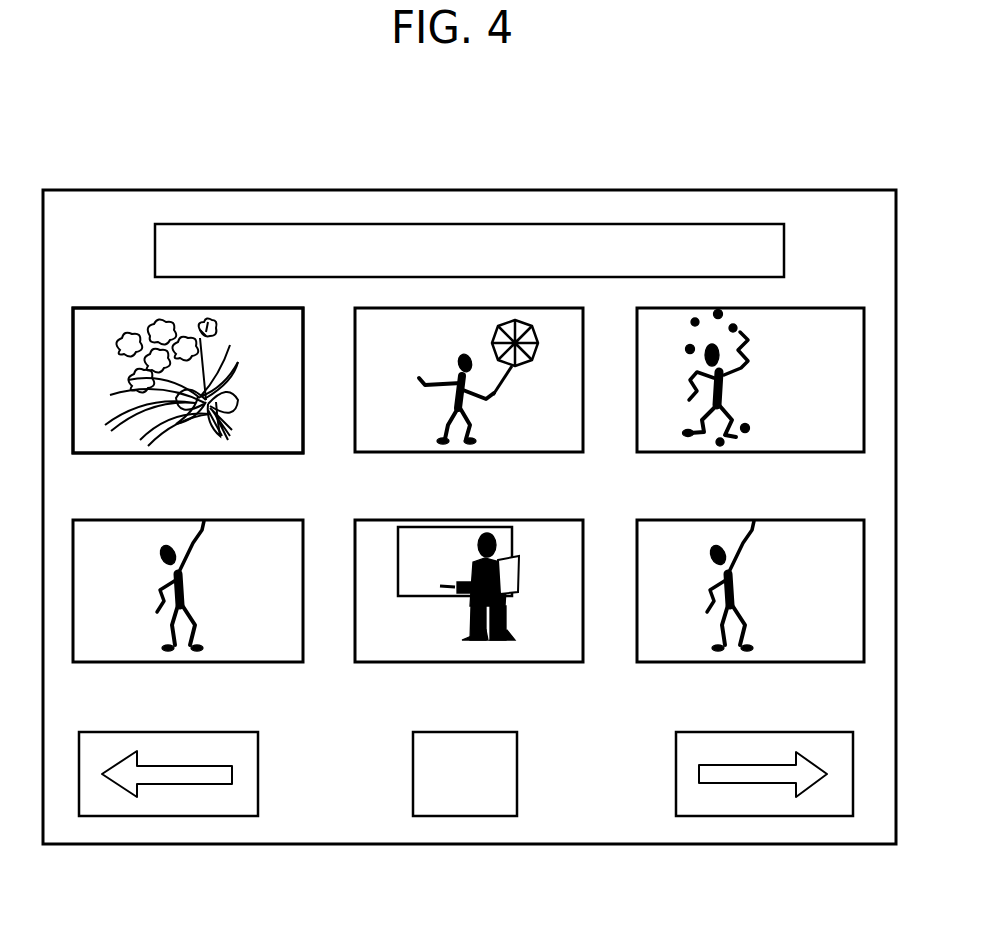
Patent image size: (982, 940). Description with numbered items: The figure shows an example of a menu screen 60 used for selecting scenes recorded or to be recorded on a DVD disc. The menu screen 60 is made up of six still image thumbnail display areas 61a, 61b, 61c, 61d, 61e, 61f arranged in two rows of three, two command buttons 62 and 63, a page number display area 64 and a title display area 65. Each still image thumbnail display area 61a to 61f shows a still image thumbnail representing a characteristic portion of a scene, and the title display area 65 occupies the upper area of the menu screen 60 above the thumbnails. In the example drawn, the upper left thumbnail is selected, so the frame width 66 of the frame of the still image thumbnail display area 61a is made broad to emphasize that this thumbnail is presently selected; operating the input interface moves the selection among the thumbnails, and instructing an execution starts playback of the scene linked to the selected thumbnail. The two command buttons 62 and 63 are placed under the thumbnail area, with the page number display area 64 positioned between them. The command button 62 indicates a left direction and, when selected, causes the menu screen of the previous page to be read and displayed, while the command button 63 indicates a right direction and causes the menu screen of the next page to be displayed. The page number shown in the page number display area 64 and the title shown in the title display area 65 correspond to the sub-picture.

The menu screen 60 is at (403, 190).
The title display area 65 is at (784, 246).
The frame width 66 is at (102, 308).
The still image thumbnail display area 61a is at (186, 455).
The still image thumbnail display area 61b is at (468, 454).
The still image thumbnail display area 61c is at (748, 454).
The still image thumbnail display area 61d is at (186, 664).
The still image thumbnail display area 61e is at (467, 664).
The still image thumbnail display area 61f is at (748, 664).
The command button 62 is at (258, 760).
The command button 63 is at (676, 790).
The page number display area 64 is at (517, 745).